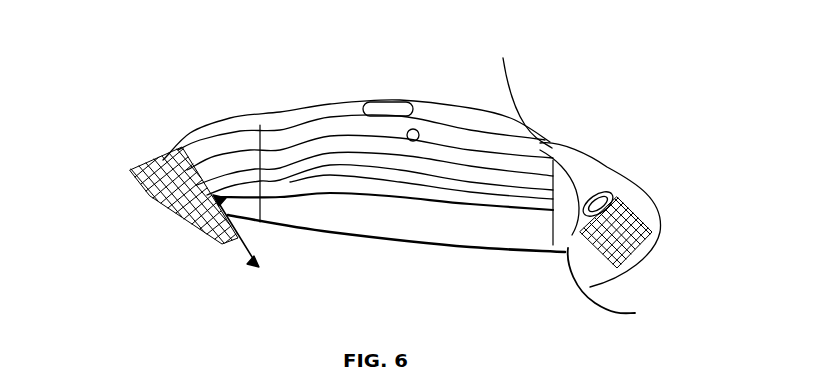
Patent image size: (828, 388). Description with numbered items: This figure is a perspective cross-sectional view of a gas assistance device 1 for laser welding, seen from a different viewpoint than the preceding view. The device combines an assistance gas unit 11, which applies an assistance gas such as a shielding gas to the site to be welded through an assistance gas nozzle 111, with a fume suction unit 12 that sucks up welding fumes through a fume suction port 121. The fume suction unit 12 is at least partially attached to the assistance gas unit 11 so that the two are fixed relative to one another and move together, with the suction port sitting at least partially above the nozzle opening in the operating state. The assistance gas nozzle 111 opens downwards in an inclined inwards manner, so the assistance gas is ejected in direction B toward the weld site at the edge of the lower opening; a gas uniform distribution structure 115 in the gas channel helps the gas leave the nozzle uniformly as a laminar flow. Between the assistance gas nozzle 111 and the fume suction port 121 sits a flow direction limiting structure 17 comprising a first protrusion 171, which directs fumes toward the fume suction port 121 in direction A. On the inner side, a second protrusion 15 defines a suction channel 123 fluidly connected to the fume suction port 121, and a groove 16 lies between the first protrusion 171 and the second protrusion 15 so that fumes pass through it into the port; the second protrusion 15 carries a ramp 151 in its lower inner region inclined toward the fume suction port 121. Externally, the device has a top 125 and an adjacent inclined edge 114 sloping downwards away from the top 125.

The gas assistance device 1 is at (177, 78).
The assistance gas unit 11 is at (148, 195).
The assistance gas nozzle 111 is at (565, 270).
The inclined edge 114 is at (643, 187).
The gas uniform distribution structure 115 is at (163, 183).
The fume suction unit 12 is at (397, 184).
The fume suction port 121 is at (225, 196).
The suction channel 123 is at (213, 195).
The top 125 is at (610, 173).
The second protrusion 15 is at (245, 152).
The ramp 151 is at (280, 155).
The groove 16 is at (367, 184).
The flow direction limiting structure 17 is at (510, 227).
The first protrusion 171 is at (622, 287).
The direction A is at (208, 203).
The direction B is at (250, 249).